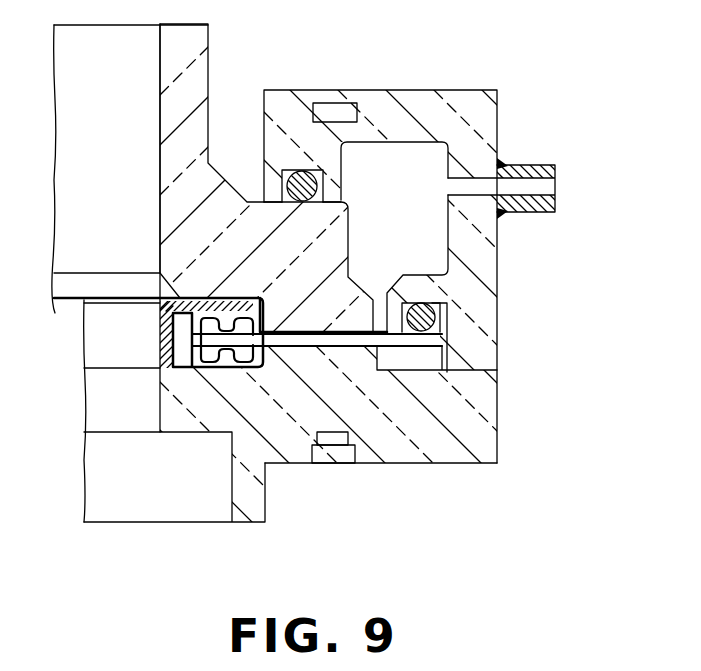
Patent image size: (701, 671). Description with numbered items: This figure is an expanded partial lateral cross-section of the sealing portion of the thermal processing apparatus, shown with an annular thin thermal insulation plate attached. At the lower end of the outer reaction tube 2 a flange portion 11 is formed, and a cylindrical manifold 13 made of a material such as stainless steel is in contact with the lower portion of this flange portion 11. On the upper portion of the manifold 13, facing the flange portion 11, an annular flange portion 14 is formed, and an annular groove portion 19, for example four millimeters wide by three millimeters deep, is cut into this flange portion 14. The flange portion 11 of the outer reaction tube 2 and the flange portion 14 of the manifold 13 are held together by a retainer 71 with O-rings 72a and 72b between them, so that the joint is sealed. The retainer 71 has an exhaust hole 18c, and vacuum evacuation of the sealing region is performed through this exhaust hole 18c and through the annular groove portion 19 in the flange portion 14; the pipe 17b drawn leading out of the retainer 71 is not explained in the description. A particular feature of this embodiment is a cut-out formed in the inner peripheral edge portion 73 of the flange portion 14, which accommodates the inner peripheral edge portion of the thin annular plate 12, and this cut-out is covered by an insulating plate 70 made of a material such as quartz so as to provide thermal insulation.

The outer reaction tube 2 is at (202, 72).
The flange portion 11 is at (265, 250).
The thin annular plate 12 is at (193, 367).
The manifold 13 is at (270, 503).
The flange portion 14 is at (415, 465).
The tube 17b is at (537, 164).
The exhaust hole 18c is at (410, 148).
The annular groove portion 19 is at (392, 358).
The insulating plate 70 is at (163, 340).
The retainer 71 is at (458, 90).
The O-ring 72a is at (310, 184).
The O-ring 72b is at (418, 310).
The inner peripheral edge portion 73 is at (227, 362).